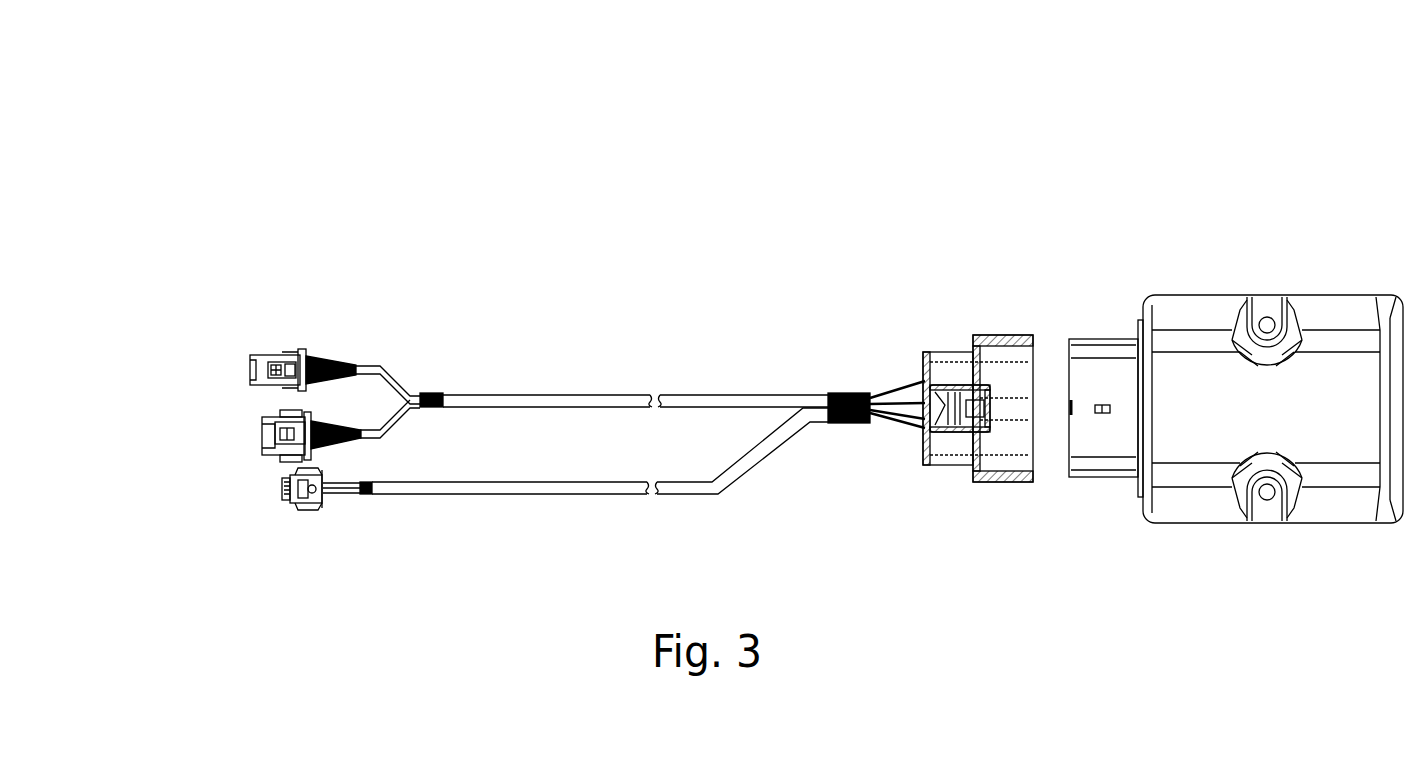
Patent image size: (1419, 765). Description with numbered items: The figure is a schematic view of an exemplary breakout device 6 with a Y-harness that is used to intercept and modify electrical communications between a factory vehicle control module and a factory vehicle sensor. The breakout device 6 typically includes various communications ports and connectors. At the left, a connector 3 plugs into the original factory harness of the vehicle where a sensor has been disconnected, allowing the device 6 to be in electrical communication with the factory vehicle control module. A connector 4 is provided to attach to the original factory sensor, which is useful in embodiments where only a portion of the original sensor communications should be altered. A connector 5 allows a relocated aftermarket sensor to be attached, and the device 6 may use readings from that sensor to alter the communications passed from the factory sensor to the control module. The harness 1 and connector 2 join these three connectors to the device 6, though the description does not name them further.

The wiring harness 1 is at (695, 395).
The harness connector 2 is at (988, 340).
The connector 3 is at (268, 357).
The connector 4 is at (262, 446).
The connector 5 is at (283, 496).
The breakout device 6 is at (1222, 296).